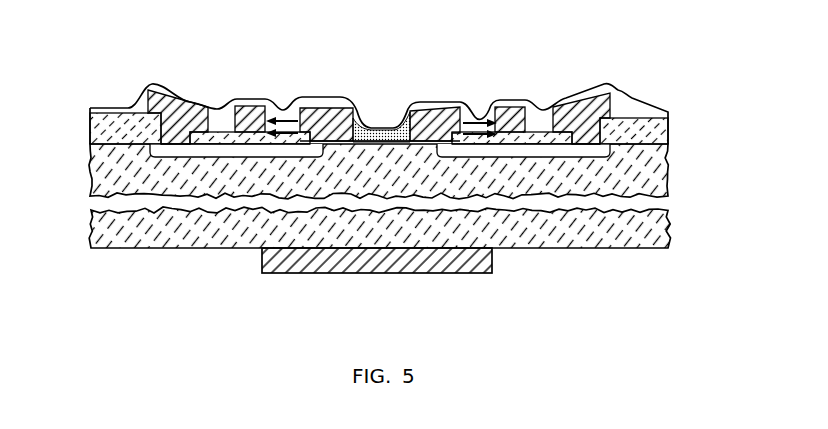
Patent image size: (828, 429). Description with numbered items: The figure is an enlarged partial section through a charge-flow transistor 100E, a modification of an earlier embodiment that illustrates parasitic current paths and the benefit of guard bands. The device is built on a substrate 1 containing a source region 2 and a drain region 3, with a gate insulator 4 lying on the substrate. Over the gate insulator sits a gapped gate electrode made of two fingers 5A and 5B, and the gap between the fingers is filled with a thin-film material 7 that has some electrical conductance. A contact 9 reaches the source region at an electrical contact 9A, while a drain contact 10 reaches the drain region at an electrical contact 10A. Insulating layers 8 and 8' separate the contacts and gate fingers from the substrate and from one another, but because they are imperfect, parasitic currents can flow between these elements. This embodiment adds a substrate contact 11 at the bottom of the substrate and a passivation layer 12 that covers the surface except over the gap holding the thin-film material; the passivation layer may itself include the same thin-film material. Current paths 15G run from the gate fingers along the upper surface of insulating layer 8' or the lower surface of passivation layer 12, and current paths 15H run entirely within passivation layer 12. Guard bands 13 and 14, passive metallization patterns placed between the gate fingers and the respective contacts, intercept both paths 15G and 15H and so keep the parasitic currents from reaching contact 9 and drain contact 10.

The substrate 1 is at (648, 172).
The source region 2 is at (543, 165).
The drain region 3 is at (228, 155).
The gate insulator 4 is at (347, 144).
The finger 5A is at (429, 118).
The finger 5B is at (329, 121).
The thin-film material 7 is at (362, 125).
The insulating layer 8 is at (394, 99).
The insulating layer 8' is at (377, 92).
The contact 9 is at (589, 104).
The electrical contact 9A is at (583, 135).
The drain contact 10 is at (158, 96).
The electrical contact 10A is at (177, 134).
The substrate contact 11 is at (303, 264).
The passivation layer 12 is at (308, 103).
The guard band 13 is at (512, 113).
The guard band 14 is at (244, 120).
The current paths 15G is at (288, 133).
The current paths 15H is at (277, 113).
The charge-flow transistor 100E is at (129, 257).